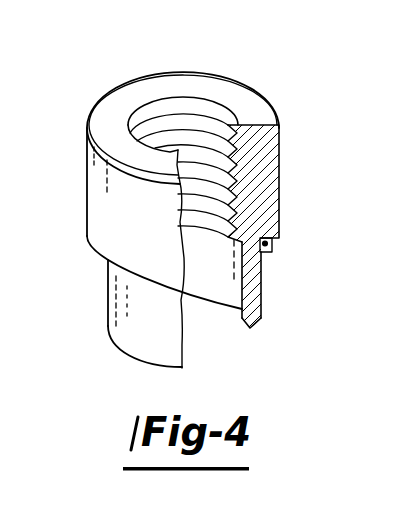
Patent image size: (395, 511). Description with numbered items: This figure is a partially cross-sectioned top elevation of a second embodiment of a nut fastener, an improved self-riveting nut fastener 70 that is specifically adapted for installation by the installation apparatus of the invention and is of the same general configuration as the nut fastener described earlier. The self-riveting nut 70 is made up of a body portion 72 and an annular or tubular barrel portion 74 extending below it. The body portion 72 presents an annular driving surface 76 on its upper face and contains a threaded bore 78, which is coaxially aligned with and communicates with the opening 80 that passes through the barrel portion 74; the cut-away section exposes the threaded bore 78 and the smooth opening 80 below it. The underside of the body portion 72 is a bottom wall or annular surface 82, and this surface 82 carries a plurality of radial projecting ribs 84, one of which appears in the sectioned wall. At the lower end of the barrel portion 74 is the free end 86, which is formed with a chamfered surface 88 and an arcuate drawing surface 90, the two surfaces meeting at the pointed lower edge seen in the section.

The self-riveting nut fastener 70 is at (205, 200).
The body portion 72 is at (87, 167).
The barrel portion 74 is at (122, 302).
The annular driving surface 76 is at (240, 98).
The threaded bore 78 is at (160, 123).
The opening 80 is at (232, 283).
The bottom wall or annular surface 82 is at (90, 255).
The radial projecting ribs 84 is at (272, 244).
The free end 86 is at (113, 340).
The chamfered surface 88 is at (246, 329).
The arcuate drawing surface 90 is at (263, 328).